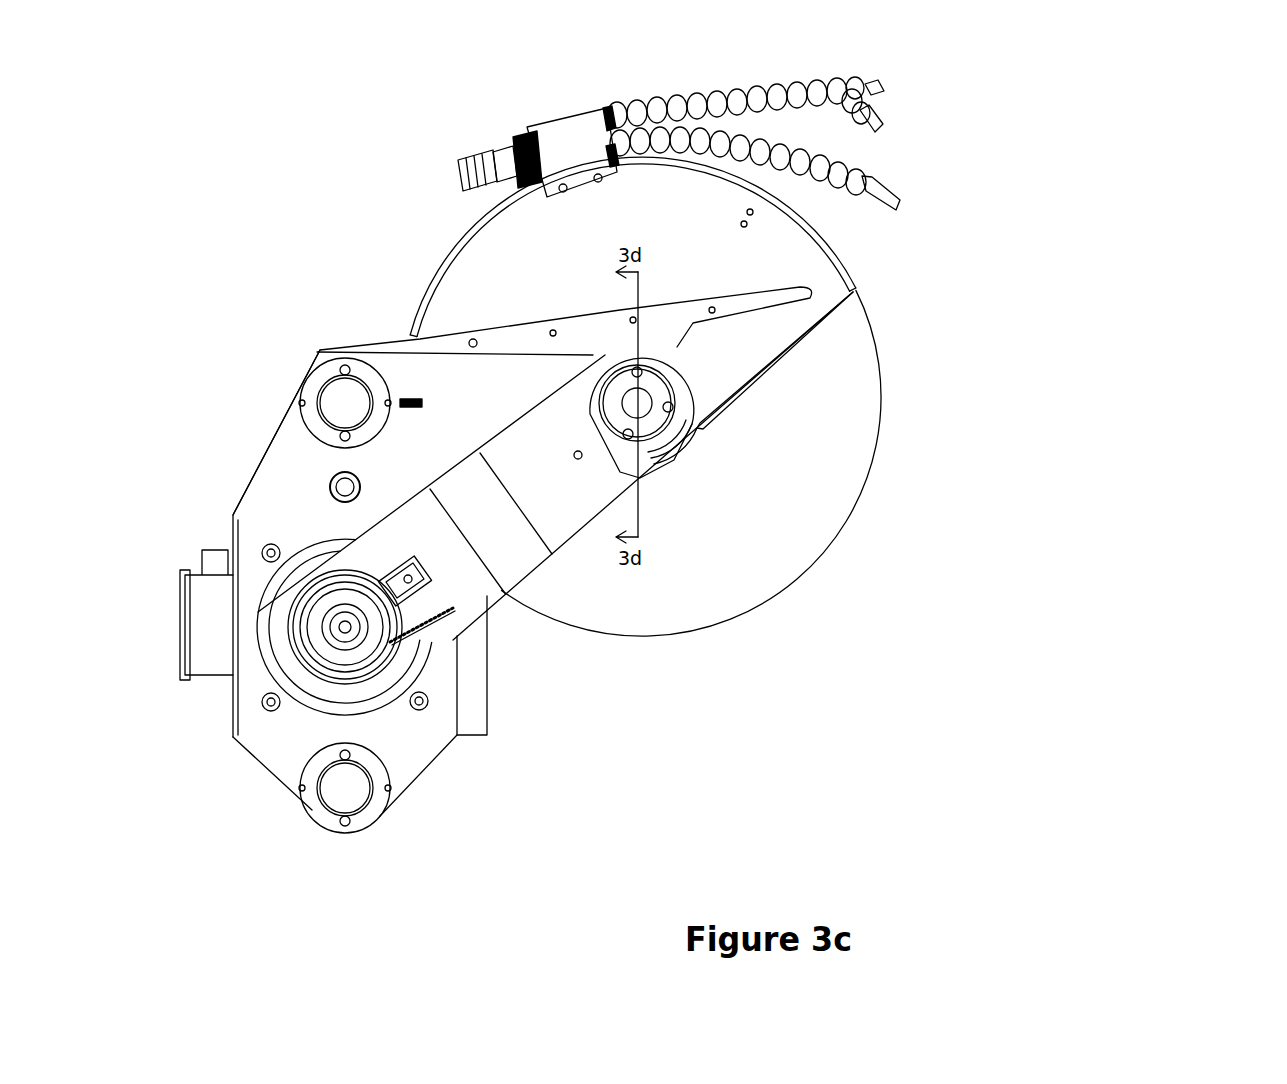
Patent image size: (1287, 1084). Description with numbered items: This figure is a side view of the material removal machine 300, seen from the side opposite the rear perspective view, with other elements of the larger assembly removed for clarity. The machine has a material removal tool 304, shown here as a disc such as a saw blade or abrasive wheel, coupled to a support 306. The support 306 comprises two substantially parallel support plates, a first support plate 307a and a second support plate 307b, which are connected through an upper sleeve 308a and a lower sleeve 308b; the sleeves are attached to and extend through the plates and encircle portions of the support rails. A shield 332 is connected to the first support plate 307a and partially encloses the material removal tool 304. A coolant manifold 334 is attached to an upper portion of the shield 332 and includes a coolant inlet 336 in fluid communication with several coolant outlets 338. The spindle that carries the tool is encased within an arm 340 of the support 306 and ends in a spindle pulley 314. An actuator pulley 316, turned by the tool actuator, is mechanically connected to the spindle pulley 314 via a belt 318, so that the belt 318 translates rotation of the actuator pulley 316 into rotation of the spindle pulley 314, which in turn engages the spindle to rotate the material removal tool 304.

The material removal machine 300 is at (1212, 169).
The material removal tool 304 is at (843, 440).
The support 306 is at (242, 463).
The first support plate 307a is at (752, 296).
The second support plate 307b is at (300, 438).
The upper sleeve 308a is at (325, 360).
The lower sleeve 308b is at (330, 813).
The spindle pulley 314 is at (632, 392).
The actuator pulley 316 is at (345, 626).
The belt 318 is at (445, 616).
The shield 332 is at (463, 267).
The coolant manifold 334 is at (580, 122).
The coolant inlet 336 is at (496, 166).
The coolant outlets 338 is at (718, 147).
The arm 340 is at (538, 492).